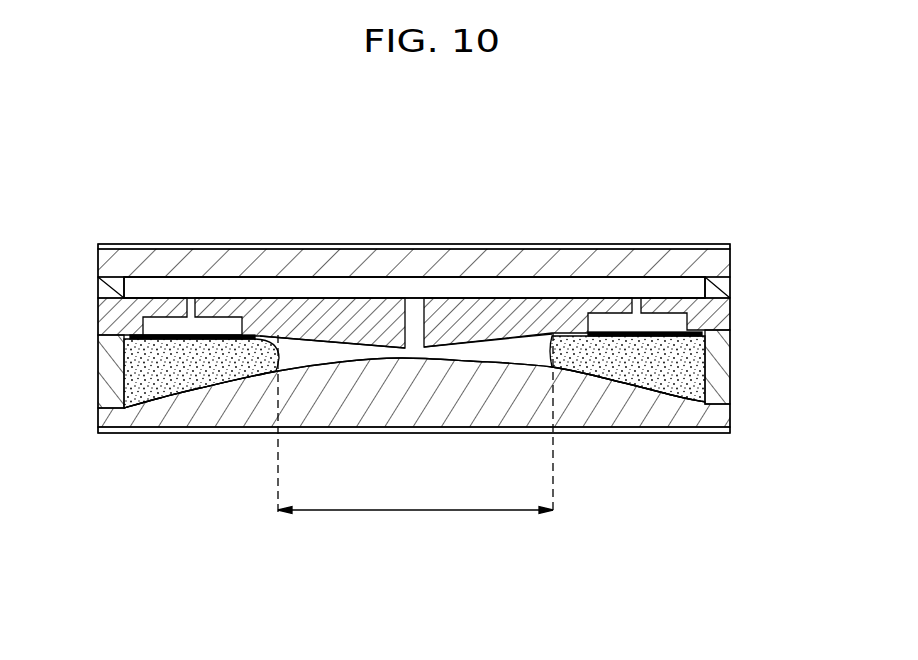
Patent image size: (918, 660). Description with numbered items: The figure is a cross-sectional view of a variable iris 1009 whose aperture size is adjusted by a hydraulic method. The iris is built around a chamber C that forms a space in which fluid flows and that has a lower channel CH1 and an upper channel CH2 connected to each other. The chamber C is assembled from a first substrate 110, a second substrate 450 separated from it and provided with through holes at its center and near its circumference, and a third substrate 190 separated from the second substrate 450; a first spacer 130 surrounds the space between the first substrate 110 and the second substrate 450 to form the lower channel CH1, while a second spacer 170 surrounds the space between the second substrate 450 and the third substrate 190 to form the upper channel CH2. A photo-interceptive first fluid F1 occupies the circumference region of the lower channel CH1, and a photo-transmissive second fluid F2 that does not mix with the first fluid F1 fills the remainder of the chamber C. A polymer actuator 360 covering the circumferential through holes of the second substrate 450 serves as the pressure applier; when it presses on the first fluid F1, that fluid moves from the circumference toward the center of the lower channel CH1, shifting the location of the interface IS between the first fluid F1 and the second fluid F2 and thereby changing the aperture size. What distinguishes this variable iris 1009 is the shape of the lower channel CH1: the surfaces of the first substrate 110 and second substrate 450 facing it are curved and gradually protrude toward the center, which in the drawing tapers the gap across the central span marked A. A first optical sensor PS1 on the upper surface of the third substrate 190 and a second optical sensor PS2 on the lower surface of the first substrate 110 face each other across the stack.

The variable iris 1009 is at (699, 201).
The first optical sensor PS1 is at (713, 243).
The second optical sensor PS2 is at (712, 431).
The third substrate 190 is at (722, 258).
The second spacer 170 is at (722, 282).
The second substrate 450 is at (722, 312).
The first spacer 130 is at (722, 371).
The first substrate 110 is at (722, 416).
The polymer actuator 360 is at (608, 336).
The first fluid F1 is at (627, 369).
The second fluid F2 is at (328, 372).
The interface IS is at (539, 366).
The lower channel CH1 is at (463, 355).
The upper channel CH2 is at (470, 288).
The chamber C is at (492, 191).
The width of inclined region A is at (415, 435).